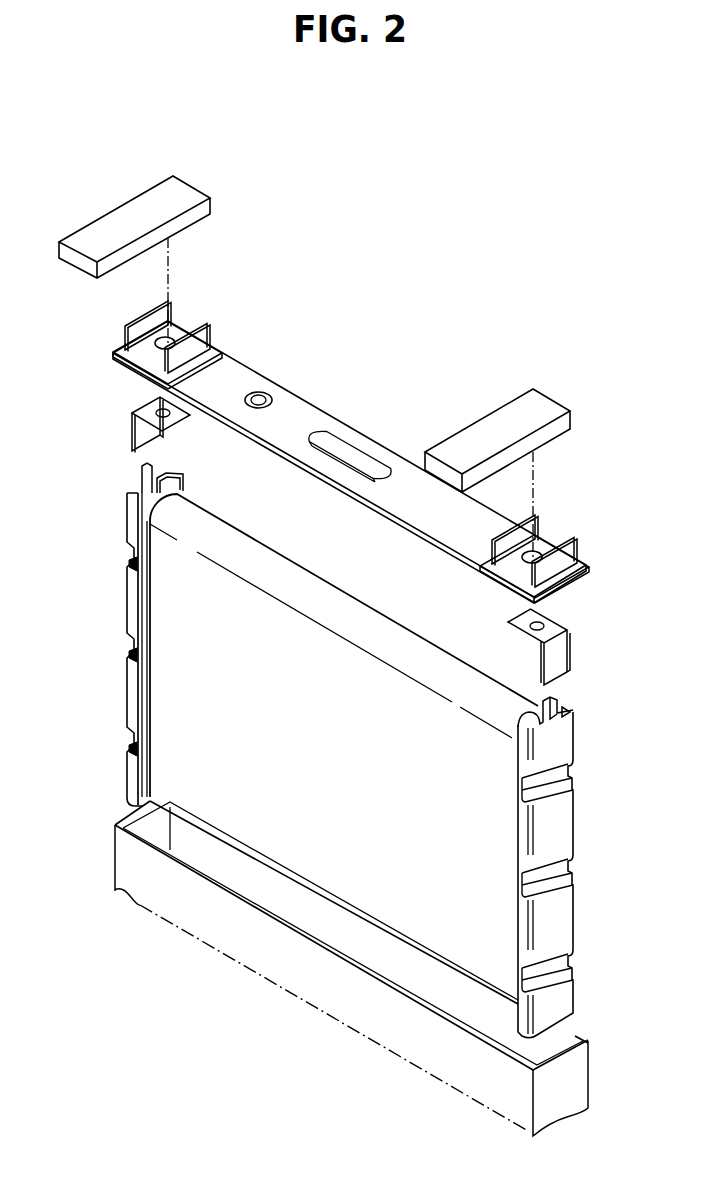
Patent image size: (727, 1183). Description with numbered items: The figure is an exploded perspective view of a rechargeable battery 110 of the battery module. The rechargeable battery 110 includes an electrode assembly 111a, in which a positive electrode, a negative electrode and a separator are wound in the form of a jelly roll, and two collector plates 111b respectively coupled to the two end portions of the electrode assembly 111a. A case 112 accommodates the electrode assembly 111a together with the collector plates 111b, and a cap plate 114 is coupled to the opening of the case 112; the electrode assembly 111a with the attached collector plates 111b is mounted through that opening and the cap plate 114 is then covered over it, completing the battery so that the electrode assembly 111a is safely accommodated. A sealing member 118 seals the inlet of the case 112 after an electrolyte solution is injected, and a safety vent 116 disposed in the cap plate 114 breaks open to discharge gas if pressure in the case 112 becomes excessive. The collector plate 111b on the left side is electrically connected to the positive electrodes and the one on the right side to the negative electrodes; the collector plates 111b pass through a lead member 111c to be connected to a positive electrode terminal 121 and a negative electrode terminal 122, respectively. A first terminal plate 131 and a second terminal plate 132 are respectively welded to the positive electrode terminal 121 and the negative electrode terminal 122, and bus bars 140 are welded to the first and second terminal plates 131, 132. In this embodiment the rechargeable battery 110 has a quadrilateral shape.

The rechargeable battery 110 is at (494, 288).
The electrode assembly 111a is at (360, 616).
The collector plates 111b is at (133, 598).
The lead member 111c is at (568, 653).
The case 112 is at (573, 1082).
The cap plate 114 is at (303, 408).
The safety vent 116 is at (355, 450).
The sealing member 118 is at (260, 396).
The positive electrode terminal 121 is at (537, 554).
The negative electrode terminal 122 is at (170, 339).
The first terminal plate 131 is at (568, 556).
The second terminal plate 132 is at (203, 340).
The bus bars 140 is at (178, 193).